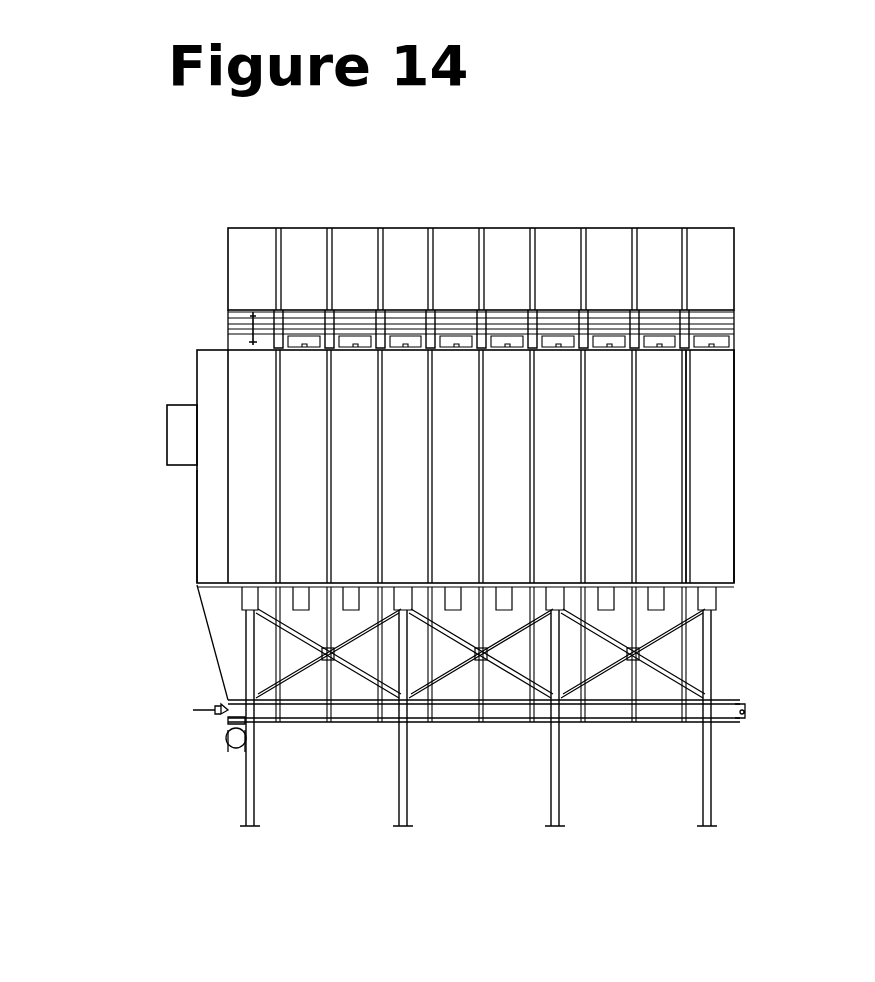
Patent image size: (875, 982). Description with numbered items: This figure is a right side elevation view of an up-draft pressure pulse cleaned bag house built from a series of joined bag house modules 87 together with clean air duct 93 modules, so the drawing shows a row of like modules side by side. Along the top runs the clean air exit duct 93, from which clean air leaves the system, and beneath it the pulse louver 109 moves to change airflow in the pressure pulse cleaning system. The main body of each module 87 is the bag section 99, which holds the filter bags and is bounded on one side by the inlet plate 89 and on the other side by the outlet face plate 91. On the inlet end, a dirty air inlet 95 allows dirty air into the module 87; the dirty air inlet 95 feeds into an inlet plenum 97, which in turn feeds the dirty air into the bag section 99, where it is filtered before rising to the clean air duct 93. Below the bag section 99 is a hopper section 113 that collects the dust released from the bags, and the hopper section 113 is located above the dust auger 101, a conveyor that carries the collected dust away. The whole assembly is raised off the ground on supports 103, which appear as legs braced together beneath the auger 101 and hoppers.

The module 87 is at (714, 553).
The inlet plate 89 is at (196, 364).
The outlet face plate 91 is at (735, 449).
The clean air exit duct 93 is at (740, 266).
The dirty air inlet 95 is at (166, 440).
The inlet plenum 97 is at (210, 523).
The bag section 99 is at (718, 508).
The dust auger 101 is at (306, 718).
The supports 103 is at (408, 802).
The pulse louver 109 is at (746, 333).
The hopper section 113 is at (222, 662).